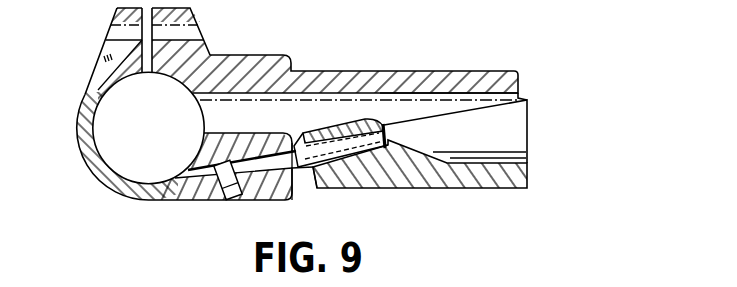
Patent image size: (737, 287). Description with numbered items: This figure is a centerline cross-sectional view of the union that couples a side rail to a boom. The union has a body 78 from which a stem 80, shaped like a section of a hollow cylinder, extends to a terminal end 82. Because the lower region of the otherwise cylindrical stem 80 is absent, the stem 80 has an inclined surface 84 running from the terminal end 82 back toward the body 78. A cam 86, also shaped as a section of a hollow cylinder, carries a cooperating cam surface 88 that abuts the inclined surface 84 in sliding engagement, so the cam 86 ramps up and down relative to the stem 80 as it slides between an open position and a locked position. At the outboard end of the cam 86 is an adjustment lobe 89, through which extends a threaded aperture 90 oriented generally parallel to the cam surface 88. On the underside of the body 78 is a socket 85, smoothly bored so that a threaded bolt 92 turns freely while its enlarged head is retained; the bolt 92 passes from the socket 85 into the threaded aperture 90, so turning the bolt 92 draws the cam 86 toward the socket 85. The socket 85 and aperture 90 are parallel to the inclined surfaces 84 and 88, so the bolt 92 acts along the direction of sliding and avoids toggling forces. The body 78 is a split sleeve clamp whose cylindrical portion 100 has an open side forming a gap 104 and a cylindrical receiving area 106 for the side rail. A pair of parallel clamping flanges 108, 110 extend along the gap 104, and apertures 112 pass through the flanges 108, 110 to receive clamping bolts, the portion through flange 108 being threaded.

The body 78 is at (259, 55).
The stem 80 is at (442, 69).
The terminal end 82 is at (525, 84).
The inclined surface 84 is at (494, 110).
The socket 85 is at (213, 192).
The cam 86 is at (517, 147).
The cam surface 88 is at (448, 113).
The adjustment lobe 89 is at (316, 127).
The threaded aperture 90 is at (387, 126).
The bolt 92 is at (305, 176).
The cylindrical portion 100 is at (88, 163).
The gap 104 is at (146, 74).
The receiving area 106 is at (109, 127).
The clamping flange 108 is at (188, 9).
The clamping flange 110 is at (118, 11).
The apertures 112 is at (189, 33).